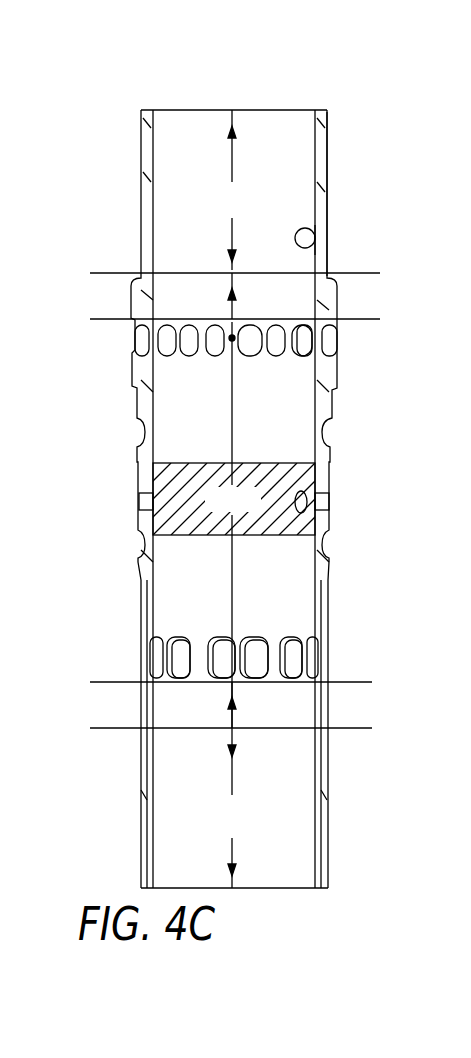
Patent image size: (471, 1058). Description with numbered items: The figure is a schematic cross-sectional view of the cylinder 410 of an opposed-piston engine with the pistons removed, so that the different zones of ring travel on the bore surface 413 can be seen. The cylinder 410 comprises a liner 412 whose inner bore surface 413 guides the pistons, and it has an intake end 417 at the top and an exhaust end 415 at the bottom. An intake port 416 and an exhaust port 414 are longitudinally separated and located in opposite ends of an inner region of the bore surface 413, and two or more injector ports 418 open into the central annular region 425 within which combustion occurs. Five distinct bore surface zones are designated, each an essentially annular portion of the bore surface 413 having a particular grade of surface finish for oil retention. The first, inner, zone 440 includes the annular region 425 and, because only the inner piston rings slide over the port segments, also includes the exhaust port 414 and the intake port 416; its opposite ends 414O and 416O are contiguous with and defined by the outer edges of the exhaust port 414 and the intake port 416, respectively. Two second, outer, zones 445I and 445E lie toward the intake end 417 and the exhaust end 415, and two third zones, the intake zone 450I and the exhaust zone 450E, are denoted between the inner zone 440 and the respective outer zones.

The cylinder 410 is at (340, 123).
The liner 412 is at (320, 193).
The bore surface 413 is at (312, 242).
The exhaust port 414 is at (342, 632).
The end of inner zone at exhaust port 414O is at (300, 686).
The exhaust end 415 is at (298, 892).
The intake port 416 is at (342, 321).
The end of inner zone at intake port 416O is at (300, 316).
The intake end 417 is at (190, 108).
The injector ports 418 is at (138, 498).
The annular region 425 is at (280, 478).
The first bore surface zone 440 is at (260, 511).
The second, outer, bore surface zone (intake side) 445I is at (260, 212).
The second, outer, bore surface zone (exhaust side) 445E is at (260, 832).
The intake zone 450I is at (293, 313).
The exhaust zone 450E is at (293, 722).